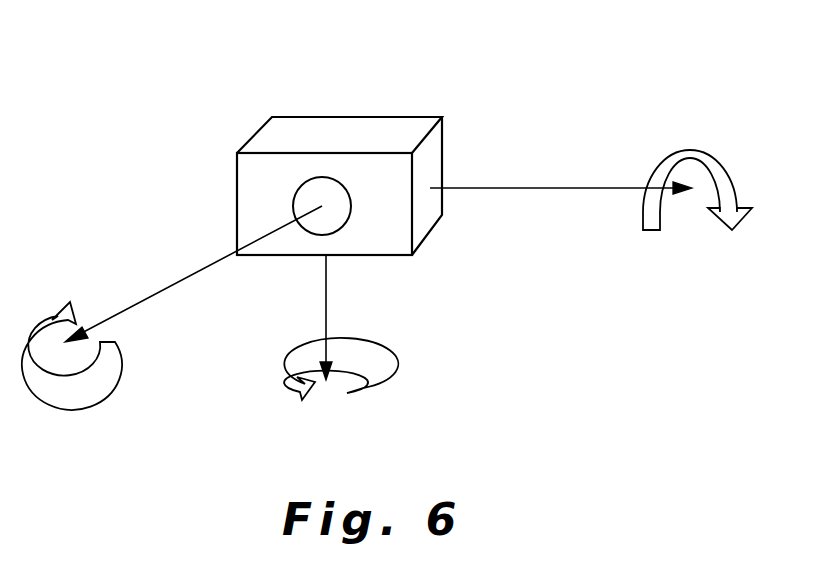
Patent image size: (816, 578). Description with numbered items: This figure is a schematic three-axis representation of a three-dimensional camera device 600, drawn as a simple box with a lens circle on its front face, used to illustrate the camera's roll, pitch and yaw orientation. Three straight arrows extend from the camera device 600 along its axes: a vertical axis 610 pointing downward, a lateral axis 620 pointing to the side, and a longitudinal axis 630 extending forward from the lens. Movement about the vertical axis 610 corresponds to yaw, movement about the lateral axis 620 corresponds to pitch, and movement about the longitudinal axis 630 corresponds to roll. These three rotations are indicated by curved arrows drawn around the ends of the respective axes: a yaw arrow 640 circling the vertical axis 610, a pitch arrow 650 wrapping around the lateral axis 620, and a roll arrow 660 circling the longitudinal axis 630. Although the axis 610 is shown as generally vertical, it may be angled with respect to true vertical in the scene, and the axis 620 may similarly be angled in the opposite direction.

The 3D camera device 600 is at (410, 113).
The vertical axis 610 is at (327, 322).
The lateral axis 620 is at (518, 186).
The longitudinal axis 630 is at (180, 278).
The yaw arrow 640 is at (357, 385).
The pitch arrow 650 is at (720, 195).
The roll arrow 660 is at (87, 356).